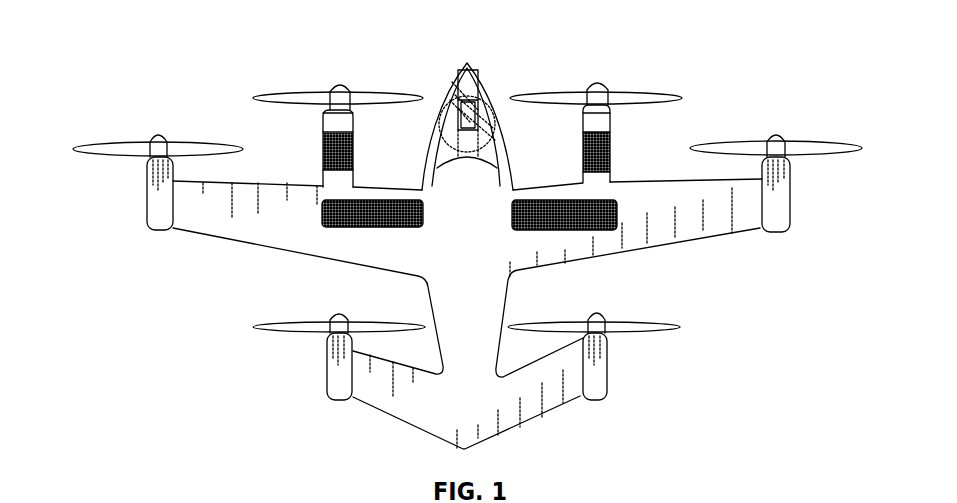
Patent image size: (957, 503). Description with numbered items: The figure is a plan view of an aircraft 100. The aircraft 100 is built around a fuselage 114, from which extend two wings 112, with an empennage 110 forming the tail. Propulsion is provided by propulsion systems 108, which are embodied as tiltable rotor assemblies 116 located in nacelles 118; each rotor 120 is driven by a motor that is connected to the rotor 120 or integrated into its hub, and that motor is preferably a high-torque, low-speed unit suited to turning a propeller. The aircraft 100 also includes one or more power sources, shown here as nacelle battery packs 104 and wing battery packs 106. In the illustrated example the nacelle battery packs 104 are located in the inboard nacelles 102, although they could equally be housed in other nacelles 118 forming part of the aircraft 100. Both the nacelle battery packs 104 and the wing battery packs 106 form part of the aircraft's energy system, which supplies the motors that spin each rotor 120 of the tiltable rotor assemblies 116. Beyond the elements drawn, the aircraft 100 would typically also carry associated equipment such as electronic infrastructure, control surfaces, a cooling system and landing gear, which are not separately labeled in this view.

The aircraft 100 is at (716, 74).
The inboard nacelles 102 is at (355, 130).
The nacelle battery packs 104 is at (323, 148).
The wing battery packs 106 is at (317, 227).
The propulsion systems 108 is at (600, 100).
The empennage 110 is at (380, 400).
The wings 112 is at (233, 232).
The fuselage 114 is at (443, 287).
The tiltable rotor assemblies 116 is at (157, 143).
The nacelles 118 is at (147, 188).
The rotor 120 is at (107, 143).